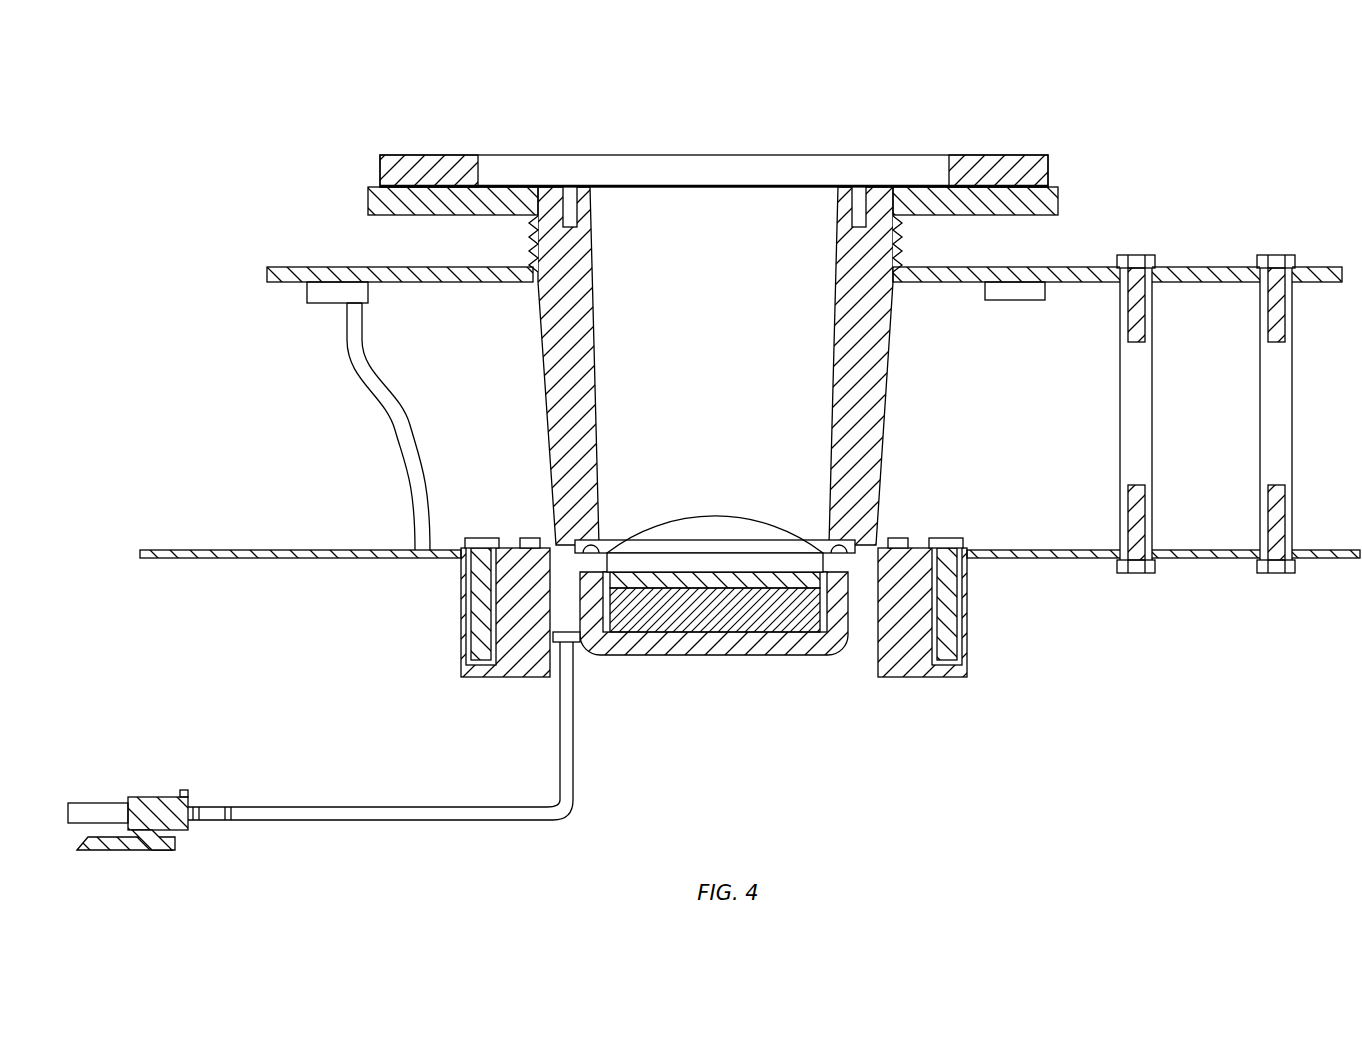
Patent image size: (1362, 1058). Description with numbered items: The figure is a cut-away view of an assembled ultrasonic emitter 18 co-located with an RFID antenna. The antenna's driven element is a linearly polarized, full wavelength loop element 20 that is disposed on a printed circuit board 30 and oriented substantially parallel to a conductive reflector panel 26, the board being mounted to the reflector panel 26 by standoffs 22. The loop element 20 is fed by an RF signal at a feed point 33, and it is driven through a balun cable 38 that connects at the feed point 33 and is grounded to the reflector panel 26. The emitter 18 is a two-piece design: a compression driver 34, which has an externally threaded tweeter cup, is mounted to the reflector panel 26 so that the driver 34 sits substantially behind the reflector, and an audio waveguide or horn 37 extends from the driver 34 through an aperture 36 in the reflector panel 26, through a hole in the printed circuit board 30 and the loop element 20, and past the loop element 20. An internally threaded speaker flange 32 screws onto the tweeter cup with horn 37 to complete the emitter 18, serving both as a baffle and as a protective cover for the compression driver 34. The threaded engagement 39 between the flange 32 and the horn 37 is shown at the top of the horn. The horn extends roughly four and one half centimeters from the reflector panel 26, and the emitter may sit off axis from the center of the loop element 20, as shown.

The ultrasonic emitter 18 is at (750, 396).
The loop element 20 is at (370, 291).
The standoffs 22 is at (1292, 412).
The reflector panel 26 is at (205, 550).
The printed circuit board 30 is at (290, 267).
The speaker flange 32 is at (430, 155).
The feed point 33 is at (347, 314).
The compression driver 34 is at (712, 657).
The aperture 36 is at (522, 532).
The horn 37 is at (880, 380).
The balun cable 38 is at (392, 426).
The threaded engagement 39 is at (523, 292).